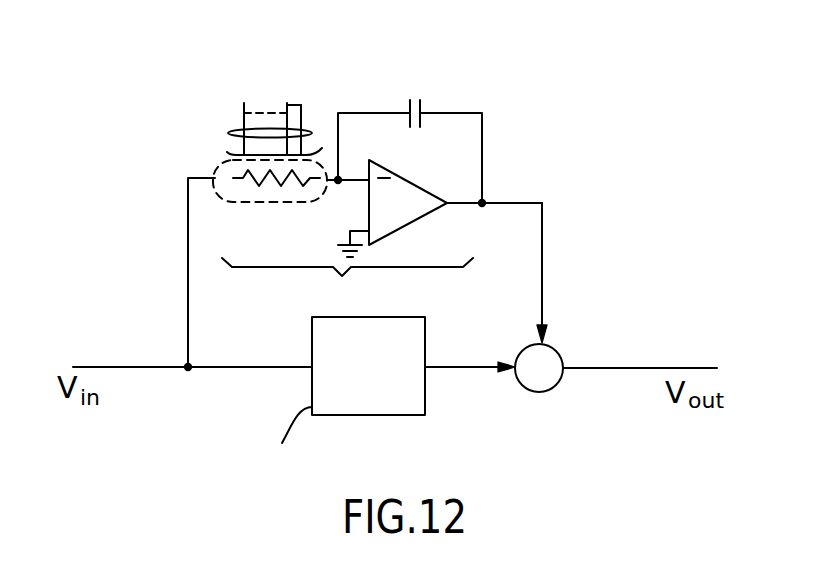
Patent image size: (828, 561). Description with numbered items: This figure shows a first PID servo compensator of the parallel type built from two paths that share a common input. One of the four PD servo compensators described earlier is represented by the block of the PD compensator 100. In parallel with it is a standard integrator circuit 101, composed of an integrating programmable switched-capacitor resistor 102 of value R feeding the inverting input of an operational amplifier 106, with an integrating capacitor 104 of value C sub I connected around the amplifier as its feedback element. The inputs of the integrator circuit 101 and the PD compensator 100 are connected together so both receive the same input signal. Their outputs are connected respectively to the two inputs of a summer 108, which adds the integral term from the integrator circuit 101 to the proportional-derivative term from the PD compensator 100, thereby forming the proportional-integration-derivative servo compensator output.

The PD compensator 100 is at (392, 378).
The integrator circuit 101 is at (347, 282).
The integrating programmable switched-capacitor resistor 102 is at (315, 153).
The integrating capacitor 104 is at (414, 96).
The operational amplifier 106 is at (412, 213).
The summing junction 108 is at (560, 350).